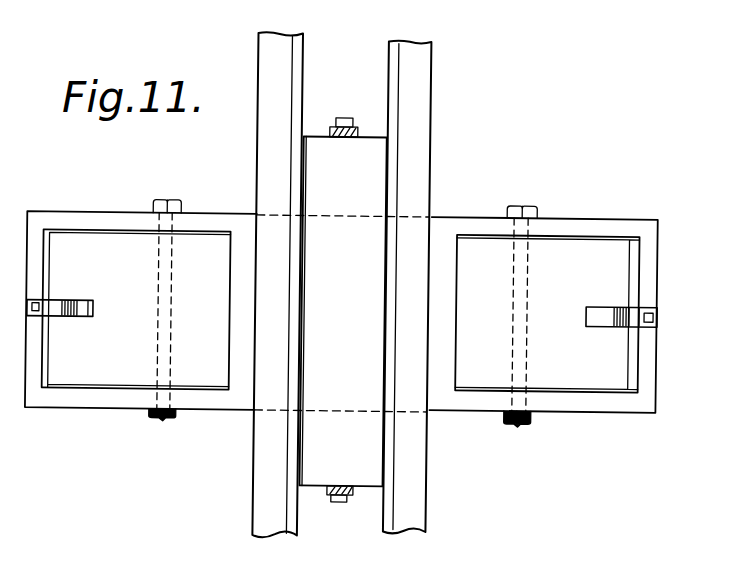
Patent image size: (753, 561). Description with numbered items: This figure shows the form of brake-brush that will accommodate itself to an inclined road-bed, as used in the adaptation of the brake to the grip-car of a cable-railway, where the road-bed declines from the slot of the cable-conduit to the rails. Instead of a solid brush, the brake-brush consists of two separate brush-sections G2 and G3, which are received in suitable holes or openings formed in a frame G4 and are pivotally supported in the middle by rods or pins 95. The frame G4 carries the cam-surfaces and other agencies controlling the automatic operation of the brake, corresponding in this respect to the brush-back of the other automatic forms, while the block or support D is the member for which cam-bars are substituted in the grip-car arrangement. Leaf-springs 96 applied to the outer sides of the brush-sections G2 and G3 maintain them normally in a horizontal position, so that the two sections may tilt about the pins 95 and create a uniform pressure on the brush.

The block or support D is at (341, 310).
The brush-section G2 is at (141, 310).
The brush-section G3 is at (543, 315).
The frame G4 is at (108, 408).
The rods or pins 95 is at (515, 426).
The leaf-springs 96 is at (80, 309).